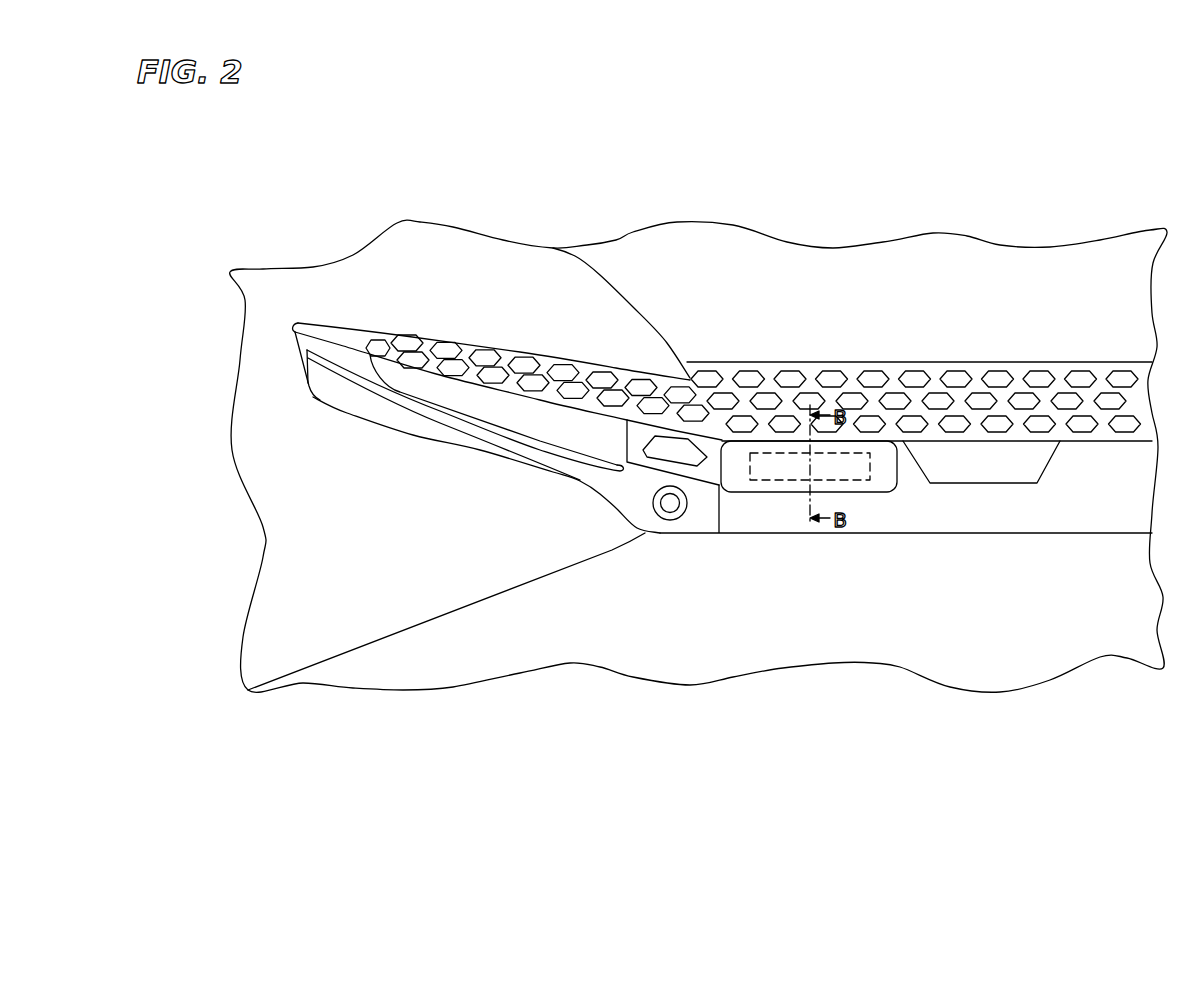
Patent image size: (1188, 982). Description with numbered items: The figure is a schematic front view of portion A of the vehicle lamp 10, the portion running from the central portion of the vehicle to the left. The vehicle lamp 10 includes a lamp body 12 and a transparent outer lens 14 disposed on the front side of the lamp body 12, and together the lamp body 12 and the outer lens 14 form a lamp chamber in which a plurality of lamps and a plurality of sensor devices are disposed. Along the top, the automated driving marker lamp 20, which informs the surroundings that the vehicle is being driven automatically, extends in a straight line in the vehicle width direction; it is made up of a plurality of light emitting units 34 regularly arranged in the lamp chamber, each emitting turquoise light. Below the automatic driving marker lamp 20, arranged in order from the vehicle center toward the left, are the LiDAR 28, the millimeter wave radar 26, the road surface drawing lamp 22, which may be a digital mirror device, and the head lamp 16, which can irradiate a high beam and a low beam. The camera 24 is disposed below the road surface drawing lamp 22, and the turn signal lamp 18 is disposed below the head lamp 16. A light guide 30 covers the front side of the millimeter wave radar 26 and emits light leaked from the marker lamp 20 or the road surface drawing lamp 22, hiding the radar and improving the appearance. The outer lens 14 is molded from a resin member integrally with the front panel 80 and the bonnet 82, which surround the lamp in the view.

The vehicle lamp 10 is at (497, 300).
The lamp body 12 is at (352, 333).
The outer lens 14 is at (322, 337).
The head lamp 16 is at (521, 417).
The turn signal lamp 18 is at (337, 376).
The automated driving marker lamp 20 is at (917, 348).
The road surface drawing lamp 22 is at (689, 458).
The camera 24 is at (669, 503).
The millimeter wave radar 26 is at (782, 483).
The LiDAR 28 is at (967, 475).
The light guide 30 is at (880, 485).
The light emitting units 34 is at (520, 354).
The front panel 80 is at (1018, 634).
The bonnet 82 is at (845, 277).